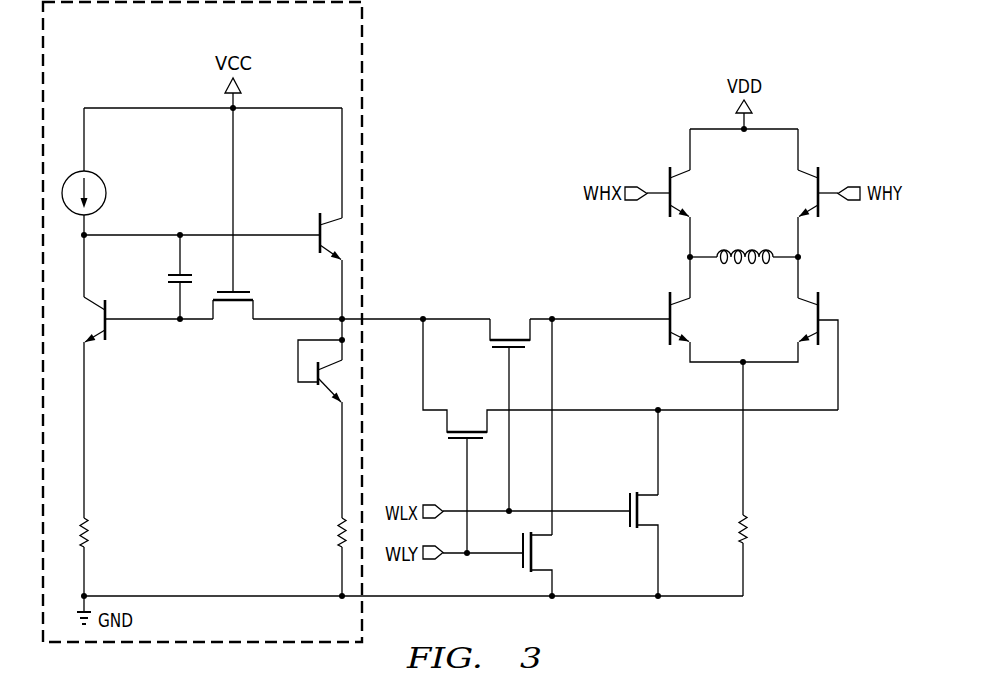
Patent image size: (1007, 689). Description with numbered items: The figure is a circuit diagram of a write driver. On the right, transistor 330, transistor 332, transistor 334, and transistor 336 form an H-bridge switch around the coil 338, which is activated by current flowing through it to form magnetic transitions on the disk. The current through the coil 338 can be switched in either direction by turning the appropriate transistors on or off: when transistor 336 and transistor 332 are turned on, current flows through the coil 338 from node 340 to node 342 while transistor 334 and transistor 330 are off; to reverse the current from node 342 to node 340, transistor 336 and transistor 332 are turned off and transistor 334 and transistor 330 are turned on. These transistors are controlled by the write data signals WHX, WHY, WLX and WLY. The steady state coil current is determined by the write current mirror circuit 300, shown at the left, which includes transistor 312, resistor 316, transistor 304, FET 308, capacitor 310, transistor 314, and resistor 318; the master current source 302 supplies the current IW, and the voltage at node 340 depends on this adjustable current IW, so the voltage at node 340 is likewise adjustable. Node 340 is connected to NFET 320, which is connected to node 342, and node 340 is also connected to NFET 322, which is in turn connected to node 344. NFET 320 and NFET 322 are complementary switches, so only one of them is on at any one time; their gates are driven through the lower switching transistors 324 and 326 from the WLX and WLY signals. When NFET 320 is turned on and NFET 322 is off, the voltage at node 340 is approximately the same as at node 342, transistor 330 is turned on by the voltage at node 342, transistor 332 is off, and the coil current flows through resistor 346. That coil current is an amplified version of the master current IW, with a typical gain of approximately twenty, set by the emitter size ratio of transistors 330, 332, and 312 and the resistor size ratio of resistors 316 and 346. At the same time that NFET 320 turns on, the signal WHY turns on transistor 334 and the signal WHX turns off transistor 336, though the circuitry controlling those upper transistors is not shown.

The write current mirror circuit 300 is at (362, 67).
The current source 302 is at (98, 174).
The transistor 304 is at (317, 217).
The FET 308 is at (242, 292).
The capacitor 310 is at (168, 277).
The transistor 312 is at (112, 337).
The transistor 314 is at (318, 400).
The resistor 316 is at (88, 530).
The resistor 318 is at (337, 530).
The NFET 320 is at (500, 350).
The NFET 322 is at (450, 445).
The transistor 324 is at (628, 520).
The transistor 326 is at (523, 565).
The transistor 330 is at (666, 296).
The transistor 332 is at (822, 296).
The transistor 334 is at (822, 167).
The transistor 336 is at (666, 167).
The coil 338 is at (733, 243).
The node 340 is at (338, 316).
The node 342 is at (552, 315).
The node 344 is at (658, 405).
The resistor 346 is at (748, 528).